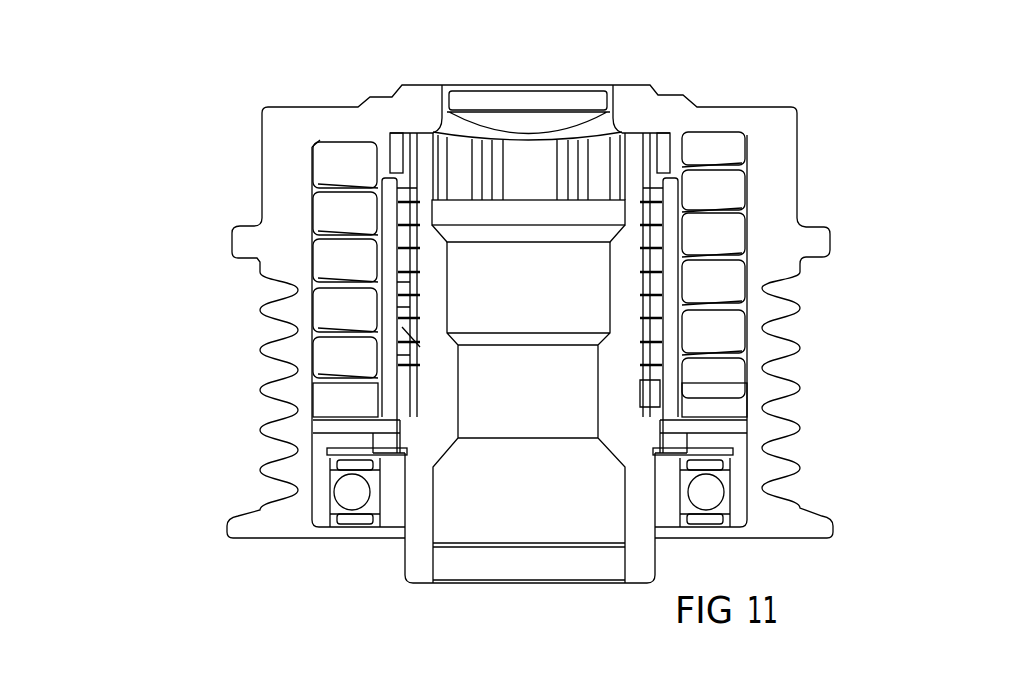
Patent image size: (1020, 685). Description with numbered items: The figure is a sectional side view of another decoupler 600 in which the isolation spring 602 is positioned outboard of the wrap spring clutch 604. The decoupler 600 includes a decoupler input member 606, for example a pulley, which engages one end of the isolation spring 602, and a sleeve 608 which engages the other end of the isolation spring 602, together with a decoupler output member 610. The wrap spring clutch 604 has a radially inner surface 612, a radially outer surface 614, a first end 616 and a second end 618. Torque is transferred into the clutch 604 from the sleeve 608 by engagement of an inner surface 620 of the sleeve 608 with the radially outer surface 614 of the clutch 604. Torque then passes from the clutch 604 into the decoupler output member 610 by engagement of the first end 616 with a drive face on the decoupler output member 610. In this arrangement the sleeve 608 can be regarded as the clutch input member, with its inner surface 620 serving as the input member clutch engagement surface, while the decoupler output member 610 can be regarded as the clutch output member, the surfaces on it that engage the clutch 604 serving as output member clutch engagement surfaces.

The decoupler 600 is at (233, 72).
The isolation spring 602 is at (343, 170).
The wrap spring clutch 604 is at (397, 282).
The decoupler input member 606 is at (283, 150).
The sleeve 608 is at (400, 326).
The decoupler output member 610 is at (440, 403).
The radially inner surface 612 is at (453, 263).
The radially outer surface 614 is at (388, 307).
The first end 616 is at (647, 415).
The second end 618 is at (407, 210).
The inner surface 620 is at (420, 348).